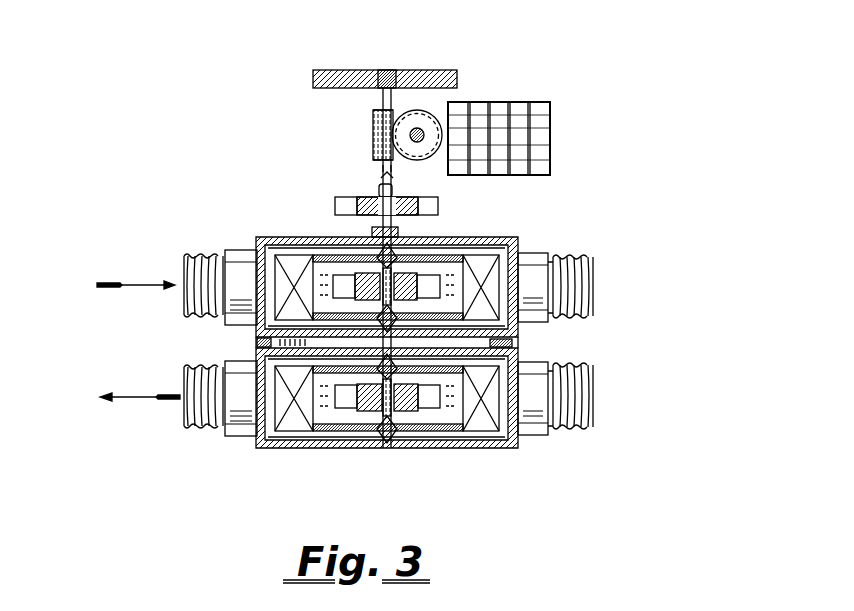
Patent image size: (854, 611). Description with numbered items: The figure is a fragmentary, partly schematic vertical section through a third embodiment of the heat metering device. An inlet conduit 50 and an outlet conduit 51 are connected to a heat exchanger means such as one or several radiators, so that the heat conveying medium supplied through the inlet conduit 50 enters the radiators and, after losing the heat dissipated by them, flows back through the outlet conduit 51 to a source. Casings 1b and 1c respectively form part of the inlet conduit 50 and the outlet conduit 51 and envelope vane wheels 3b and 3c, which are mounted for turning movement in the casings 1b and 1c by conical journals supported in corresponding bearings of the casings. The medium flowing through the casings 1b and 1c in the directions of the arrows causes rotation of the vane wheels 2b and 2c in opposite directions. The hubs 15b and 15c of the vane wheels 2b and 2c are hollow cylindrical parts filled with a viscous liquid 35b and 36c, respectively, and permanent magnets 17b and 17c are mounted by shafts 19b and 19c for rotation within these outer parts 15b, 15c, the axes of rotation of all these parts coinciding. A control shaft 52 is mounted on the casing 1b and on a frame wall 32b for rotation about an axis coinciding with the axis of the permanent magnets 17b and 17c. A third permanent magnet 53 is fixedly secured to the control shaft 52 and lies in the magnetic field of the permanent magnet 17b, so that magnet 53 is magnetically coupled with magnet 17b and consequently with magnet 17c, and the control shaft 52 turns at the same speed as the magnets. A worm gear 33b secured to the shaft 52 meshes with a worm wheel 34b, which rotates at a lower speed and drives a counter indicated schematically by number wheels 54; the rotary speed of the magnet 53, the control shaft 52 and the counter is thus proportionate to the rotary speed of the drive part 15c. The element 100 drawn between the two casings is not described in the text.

The casing 1b is at (260, 256).
The vane wheel 2b is at (323, 248).
The vane wheel 3b is at (284, 262).
The hub 15b is at (534, 253).
The permanent magnet 17b is at (465, 292).
The shaft 19b is at (401, 272).
The frame wall 32b is at (335, 70).
The worm gear 33b is at (373, 137).
The worm wheel 34b is at (413, 121).
The viscous liquid 35b is at (250, 333).
The inlet conduit 50 is at (200, 273).
The outlet conduit 51 is at (197, 428).
The control shaft 52 is at (383, 171).
The third permanent magnet 53 is at (335, 200).
The number wheels 54 is at (556, 134).
The spacer 100 is at (517, 330).
The casing 1c is at (265, 437).
The vane wheel 2c is at (343, 437).
The vane wheel 3c is at (293, 423).
The hub 15c is at (497, 447).
The permanent magnet 17c is at (437, 437).
The shaft 19c is at (403, 447).
The viscous liquid 36c is at (364, 418).